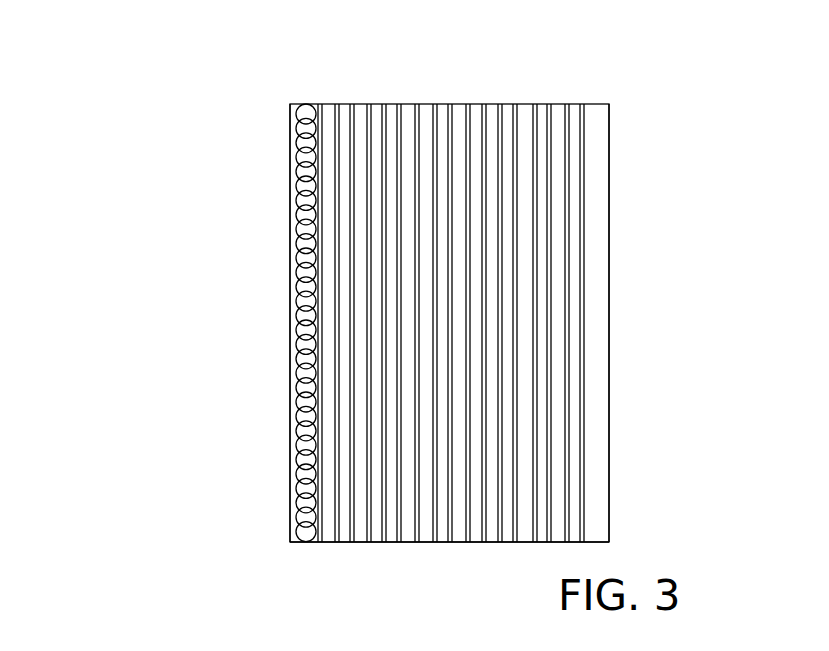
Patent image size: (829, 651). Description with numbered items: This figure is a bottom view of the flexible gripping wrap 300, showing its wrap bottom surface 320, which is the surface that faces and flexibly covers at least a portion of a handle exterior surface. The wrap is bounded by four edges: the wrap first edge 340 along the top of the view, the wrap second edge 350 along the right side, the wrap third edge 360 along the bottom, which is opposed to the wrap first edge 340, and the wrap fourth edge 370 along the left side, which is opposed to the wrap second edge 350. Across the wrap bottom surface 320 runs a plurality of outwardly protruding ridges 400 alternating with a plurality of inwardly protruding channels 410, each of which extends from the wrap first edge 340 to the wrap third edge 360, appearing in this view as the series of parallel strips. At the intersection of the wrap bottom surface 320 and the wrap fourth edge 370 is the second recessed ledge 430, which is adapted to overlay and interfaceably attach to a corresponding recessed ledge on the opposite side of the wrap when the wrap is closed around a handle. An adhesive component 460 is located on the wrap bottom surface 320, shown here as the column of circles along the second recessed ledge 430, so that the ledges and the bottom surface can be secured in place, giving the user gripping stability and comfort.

The flexible gripping wrap 300 is at (222, 148).
The wrap bottom surface 320 is at (343, 120).
The wrap first edge 340 is at (510, 542).
The wrap second edge 350 is at (609, 215).
The wrap third edge 360 is at (492, 103).
The wrap fourth edge 370 is at (290, 450).
The outwardly protruding ridges 400 is at (583, 122).
The inwardly protruding channels 410 is at (402, 112).
The second recessed ledge 430 is at (293, 378).
The adhesive component 460 is at (305, 302).